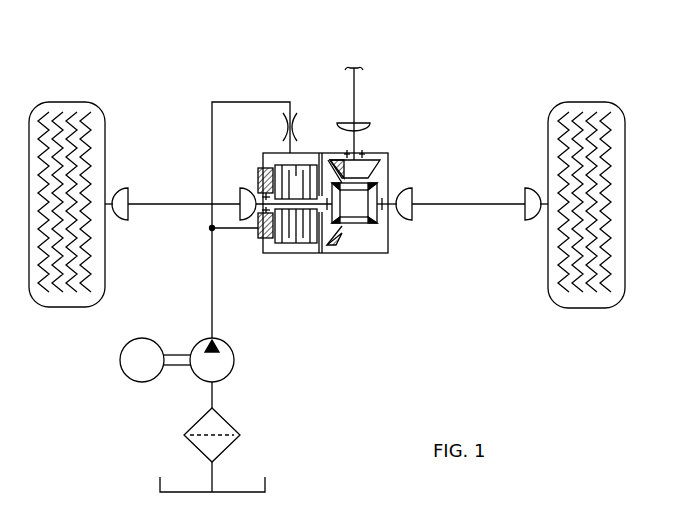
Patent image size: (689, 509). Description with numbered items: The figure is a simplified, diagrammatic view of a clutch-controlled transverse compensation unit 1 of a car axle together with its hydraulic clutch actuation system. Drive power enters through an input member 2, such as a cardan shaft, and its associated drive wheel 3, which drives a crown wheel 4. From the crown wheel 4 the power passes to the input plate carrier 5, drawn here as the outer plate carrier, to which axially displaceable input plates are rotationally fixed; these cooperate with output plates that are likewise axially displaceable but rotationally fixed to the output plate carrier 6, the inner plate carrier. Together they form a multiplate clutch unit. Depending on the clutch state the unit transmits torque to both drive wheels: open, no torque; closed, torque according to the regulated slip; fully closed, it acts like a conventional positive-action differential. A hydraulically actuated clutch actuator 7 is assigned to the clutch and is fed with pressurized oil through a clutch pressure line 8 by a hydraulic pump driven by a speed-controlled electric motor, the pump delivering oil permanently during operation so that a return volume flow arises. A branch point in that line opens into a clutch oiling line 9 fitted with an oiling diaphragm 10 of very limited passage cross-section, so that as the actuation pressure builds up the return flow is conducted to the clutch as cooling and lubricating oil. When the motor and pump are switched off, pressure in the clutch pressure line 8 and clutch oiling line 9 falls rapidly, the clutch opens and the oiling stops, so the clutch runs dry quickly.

The transverse compensation unit 1 is at (420, 134).
The input member 2 is at (355, 92).
The drive wheel 3 is at (368, 158).
The crown wheel 4 is at (322, 155).
The input plate carrier 5 is at (293, 245).
The output plate carrier 6 is at (308, 244).
The clutch actuator 7 is at (251, 168).
The clutch pressure line 8 is at (212, 321).
The clutch oiling line 9 is at (211, 137).
The oiling diaphragm 10 is at (286, 128).